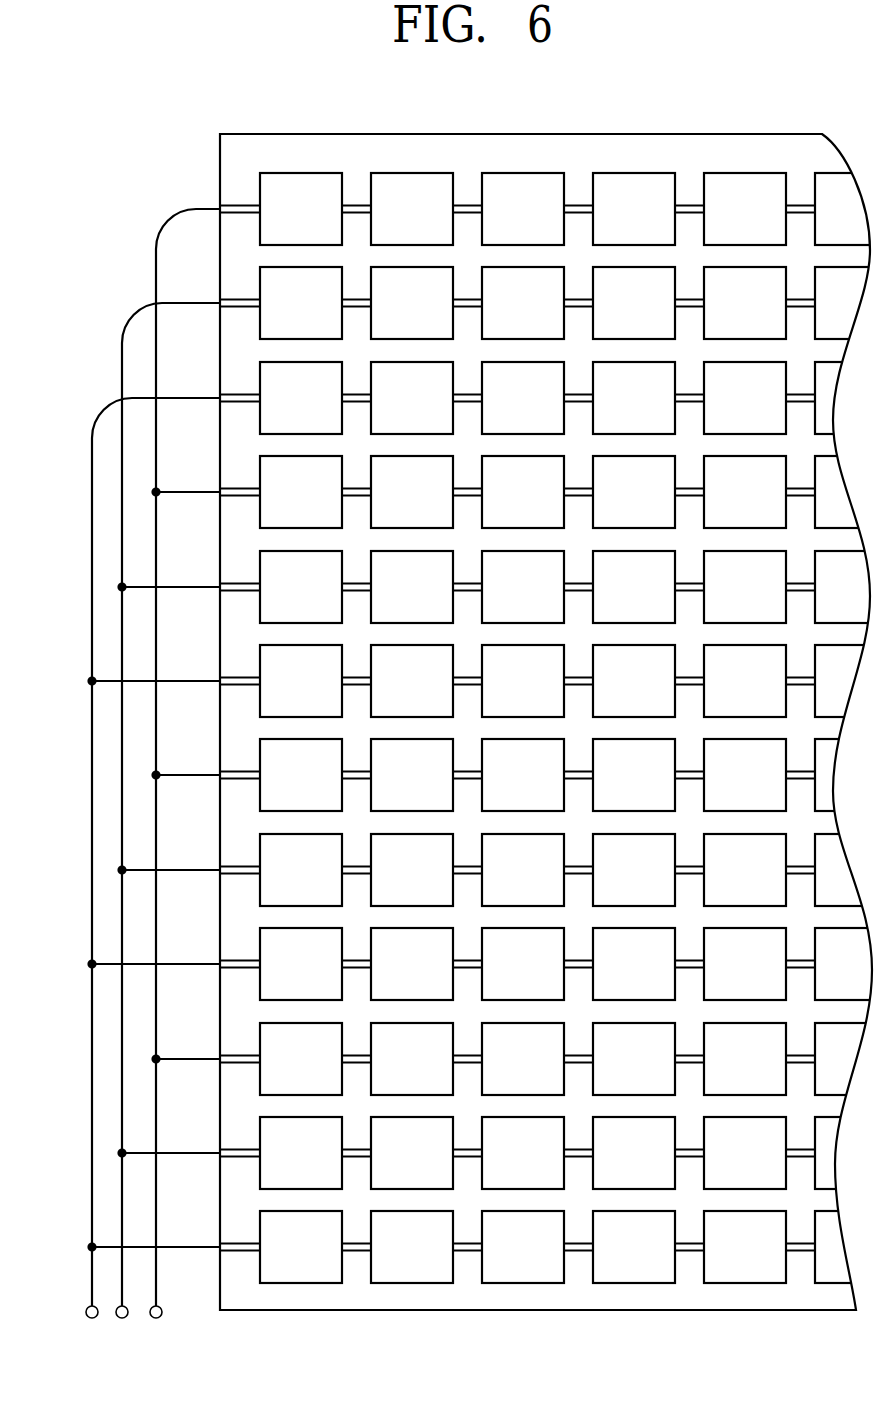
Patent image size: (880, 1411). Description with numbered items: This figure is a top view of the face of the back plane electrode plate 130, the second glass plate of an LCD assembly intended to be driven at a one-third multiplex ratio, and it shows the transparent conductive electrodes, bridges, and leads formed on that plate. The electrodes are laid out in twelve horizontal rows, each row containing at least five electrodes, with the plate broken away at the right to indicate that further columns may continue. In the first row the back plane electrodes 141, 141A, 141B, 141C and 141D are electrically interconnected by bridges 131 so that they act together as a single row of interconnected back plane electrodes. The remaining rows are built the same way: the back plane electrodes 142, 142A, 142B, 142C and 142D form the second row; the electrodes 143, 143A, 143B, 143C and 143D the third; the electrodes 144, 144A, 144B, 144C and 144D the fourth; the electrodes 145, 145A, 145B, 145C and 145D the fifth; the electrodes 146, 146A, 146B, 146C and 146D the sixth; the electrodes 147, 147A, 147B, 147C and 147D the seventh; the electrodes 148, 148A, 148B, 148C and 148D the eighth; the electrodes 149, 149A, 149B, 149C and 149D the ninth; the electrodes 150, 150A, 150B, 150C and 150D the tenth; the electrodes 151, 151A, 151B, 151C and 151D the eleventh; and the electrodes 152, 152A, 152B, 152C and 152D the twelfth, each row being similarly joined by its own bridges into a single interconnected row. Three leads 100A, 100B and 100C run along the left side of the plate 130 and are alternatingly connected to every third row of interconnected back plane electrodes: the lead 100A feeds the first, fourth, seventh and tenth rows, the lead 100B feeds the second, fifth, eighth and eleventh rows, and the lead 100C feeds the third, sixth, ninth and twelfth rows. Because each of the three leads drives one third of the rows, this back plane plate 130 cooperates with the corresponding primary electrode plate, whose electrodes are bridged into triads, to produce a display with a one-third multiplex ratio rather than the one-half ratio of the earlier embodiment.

The back plane electrode plate 130 is at (290, 134).
The bridges 131 is at (356, 200).
The lead 100A is at (185, 774).
The lead 100B is at (161, 825).
The lead 100C is at (130, 870).
The back plane electrode 141 is at (301, 209).
The back plane electrode 141A is at (412, 209).
The back plane electrode 141B is at (523, 209).
The back plane electrode 141C is at (634, 209).
The back plane electrode 141D is at (745, 209).
The back plane electrode 142 is at (301, 303).
The back plane electrode 142A is at (412, 303).
The back plane electrode 142B is at (523, 303).
The back plane electrode 142C is at (634, 303).
The back plane electrode 142D is at (745, 303).
The back plane electrode 143 is at (301, 398).
The back plane electrode 143A is at (412, 398).
The back plane electrode 143B is at (523, 398).
The back plane electrode 143C is at (634, 398).
The back plane electrode 143D is at (745, 398).
The back plane electrode 144 is at (301, 492).
The back plane electrode 144A is at (412, 492).
The back plane electrode 144B is at (523, 492).
The back plane electrode 144C is at (634, 492).
The back plane electrode 144D is at (745, 492).
The back plane electrode 145 is at (301, 587).
The back plane electrode 145A is at (412, 587).
The back plane electrode 145B is at (523, 587).
The back plane electrode 145C is at (634, 587).
The back plane electrode 145D is at (745, 587).
The back plane electrode 146 is at (301, 681).
The back plane electrode 146A is at (412, 681).
The back plane electrode 146B is at (523, 681).
The back plane electrode 146C is at (634, 681).
The back plane electrode 146D is at (745, 681).
The back plane electrode 147 is at (301, 775).
The back plane electrode 147A is at (412, 775).
The back plane electrode 147B is at (523, 775).
The back plane electrode 147C is at (634, 775).
The back plane electrode 147D is at (745, 775).
The back plane electrode 148 is at (301, 870).
The back plane electrode 148A is at (412, 870).
The back plane electrode 148B is at (523, 870).
The back plane electrode 148C is at (634, 870).
The back plane electrode 148D is at (745, 870).
The back plane electrode 149 is at (301, 964).
The back plane electrode 149A is at (412, 964).
The back plane electrode 149B is at (523, 964).
The back plane electrode 149C is at (634, 964).
The back plane electrode 149D is at (745, 964).
The back plane electrode 150 is at (301, 1059).
The back plane electrode 150A is at (412, 1059).
The back plane electrode 150B is at (523, 1059).
The back plane electrode 150C is at (634, 1059).
The back plane electrode 150D is at (745, 1059).
The back plane electrode 151 is at (301, 1153).
The back plane electrode 151A is at (412, 1153).
The back plane electrode 151B is at (523, 1153).
The back plane electrode 151C is at (634, 1153).
The back plane electrode 151D is at (745, 1153).
The back plane electrode 152 is at (301, 1247).
The back plane electrode 152A is at (412, 1247).
The back plane electrode 152B is at (523, 1247).
The back plane electrode 152C is at (634, 1247).
The back plane electrode 152D is at (745, 1247).